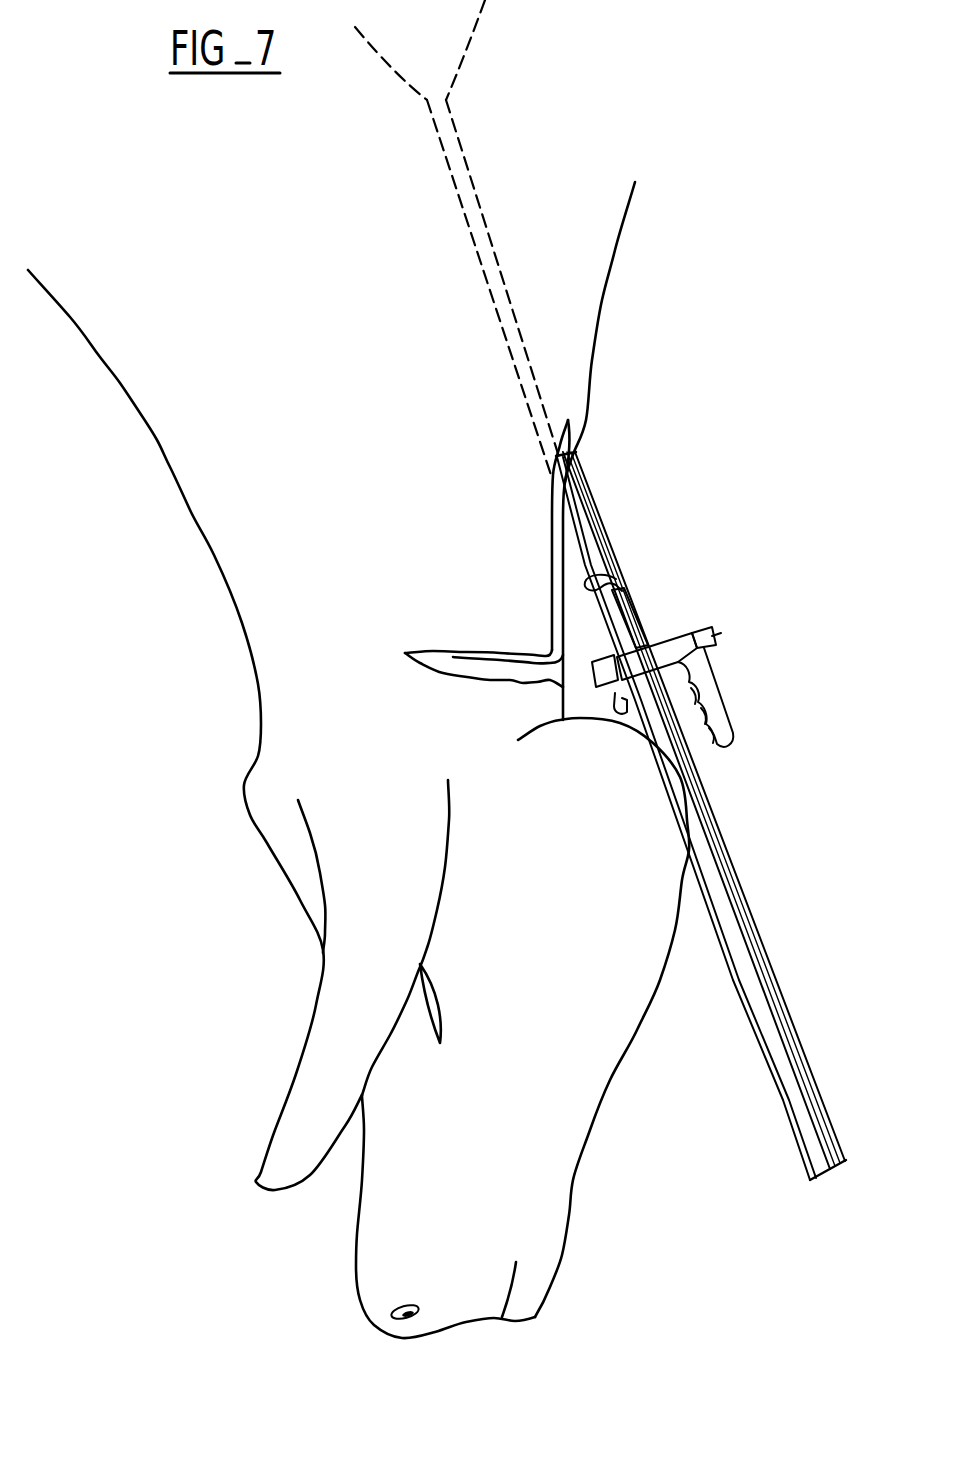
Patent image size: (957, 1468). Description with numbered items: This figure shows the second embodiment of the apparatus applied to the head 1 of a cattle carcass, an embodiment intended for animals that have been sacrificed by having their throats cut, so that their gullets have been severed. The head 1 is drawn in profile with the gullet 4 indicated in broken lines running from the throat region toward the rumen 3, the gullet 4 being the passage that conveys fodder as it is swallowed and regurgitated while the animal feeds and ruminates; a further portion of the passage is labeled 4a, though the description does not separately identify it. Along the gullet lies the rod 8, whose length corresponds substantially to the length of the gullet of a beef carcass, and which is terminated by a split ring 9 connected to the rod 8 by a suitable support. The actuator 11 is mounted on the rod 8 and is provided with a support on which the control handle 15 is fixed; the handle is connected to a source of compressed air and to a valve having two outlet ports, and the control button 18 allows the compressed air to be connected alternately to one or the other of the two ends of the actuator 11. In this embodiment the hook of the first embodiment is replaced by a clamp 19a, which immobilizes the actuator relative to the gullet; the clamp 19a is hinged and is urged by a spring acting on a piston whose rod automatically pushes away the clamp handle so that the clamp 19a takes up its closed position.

The head 1 is at (573, 1057).
The rumen 3 is at (460, 23).
The gullet 4 is at (490, 233).
The tube end portion 4a is at (622, 712).
The rod 8 is at (590, 648).
The split ring 9 is at (605, 574).
The actuator 11 is at (717, 870).
The control handle 15 is at (712, 697).
The control button 18 is at (705, 641).
The clamp 19a is at (625, 591).